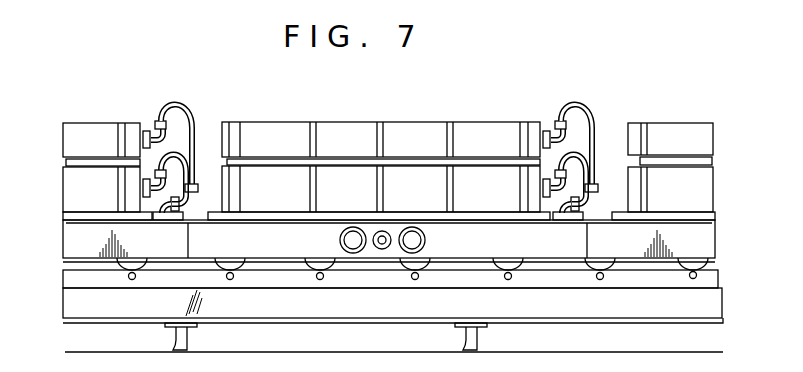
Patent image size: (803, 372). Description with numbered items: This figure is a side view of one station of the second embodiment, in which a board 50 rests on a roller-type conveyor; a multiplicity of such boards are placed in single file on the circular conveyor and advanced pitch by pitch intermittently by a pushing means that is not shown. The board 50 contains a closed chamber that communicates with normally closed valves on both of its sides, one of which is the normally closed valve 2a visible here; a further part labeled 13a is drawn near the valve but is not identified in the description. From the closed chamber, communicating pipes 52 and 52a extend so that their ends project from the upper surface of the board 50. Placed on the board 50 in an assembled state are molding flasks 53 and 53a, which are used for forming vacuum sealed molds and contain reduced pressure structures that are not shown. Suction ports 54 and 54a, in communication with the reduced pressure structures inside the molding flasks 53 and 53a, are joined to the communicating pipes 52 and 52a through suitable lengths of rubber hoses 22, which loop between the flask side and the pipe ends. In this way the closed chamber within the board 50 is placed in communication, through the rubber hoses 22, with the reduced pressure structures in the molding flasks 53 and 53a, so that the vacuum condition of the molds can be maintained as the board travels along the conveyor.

The board 50 is at (708, 247).
The molding flask 53 is at (75, 187).
The molding flask 53a is at (99, 138).
The suction port 54a is at (562, 132).
The suction port 54 is at (559, 202).
The rubber hose 22 is at (577, 110).
The communicating pipe 52 is at (586, 200).
The communicating pipe 52a is at (589, 203).
The normally closed valve 2a is at (340, 240).
The shaft 13a is at (382, 249).